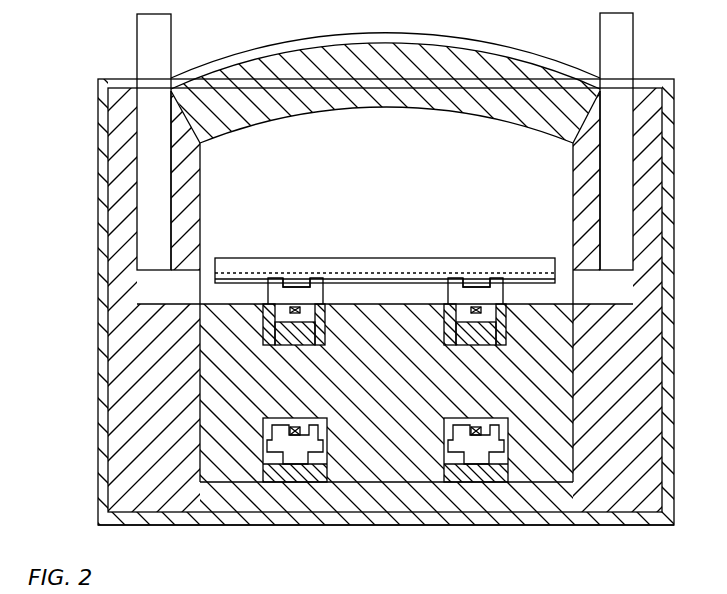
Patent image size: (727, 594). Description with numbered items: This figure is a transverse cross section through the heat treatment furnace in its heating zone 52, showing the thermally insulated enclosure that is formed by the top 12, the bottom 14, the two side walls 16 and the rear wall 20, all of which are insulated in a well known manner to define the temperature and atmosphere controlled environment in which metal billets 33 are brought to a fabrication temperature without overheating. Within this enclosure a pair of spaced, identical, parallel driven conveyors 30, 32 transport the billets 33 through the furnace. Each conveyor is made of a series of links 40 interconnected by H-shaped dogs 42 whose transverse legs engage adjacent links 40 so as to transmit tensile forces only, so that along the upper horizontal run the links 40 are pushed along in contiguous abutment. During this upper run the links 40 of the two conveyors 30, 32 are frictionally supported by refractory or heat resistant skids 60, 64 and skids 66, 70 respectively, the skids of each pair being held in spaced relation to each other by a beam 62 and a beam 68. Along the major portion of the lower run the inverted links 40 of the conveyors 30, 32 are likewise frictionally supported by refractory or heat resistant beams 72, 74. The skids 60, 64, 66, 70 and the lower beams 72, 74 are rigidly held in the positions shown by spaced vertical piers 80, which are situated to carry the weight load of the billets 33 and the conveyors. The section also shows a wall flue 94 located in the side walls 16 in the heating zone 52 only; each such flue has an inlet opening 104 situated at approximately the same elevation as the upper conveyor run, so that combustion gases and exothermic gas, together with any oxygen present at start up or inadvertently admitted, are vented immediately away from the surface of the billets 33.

The top 12 is at (303, 44).
The bottom 14 is at (536, 526).
The side walls 16 is at (104, 134).
The rear wall 20 is at (331, 182).
The driven conveyor 30 is at (292, 275).
The driven conveyor 32 is at (475, 275).
The billets 33 is at (370, 263).
The links 40 is at (268, 293).
The dogs 42 is at (302, 311).
The heating zone 52 is at (510, 143).
The skid 60 is at (265, 337).
The beam 62 is at (283, 342).
The skid 64 is at (323, 339).
The skid 66 is at (449, 343).
The beam 68 is at (479, 345).
The skid 70 is at (506, 339).
The beam 72 is at (323, 479).
The beam 74 is at (504, 479).
The vertical piers 80 is at (396, 404).
The wall flue 94 is at (138, 216).
The inlet opening 104 is at (178, 272).